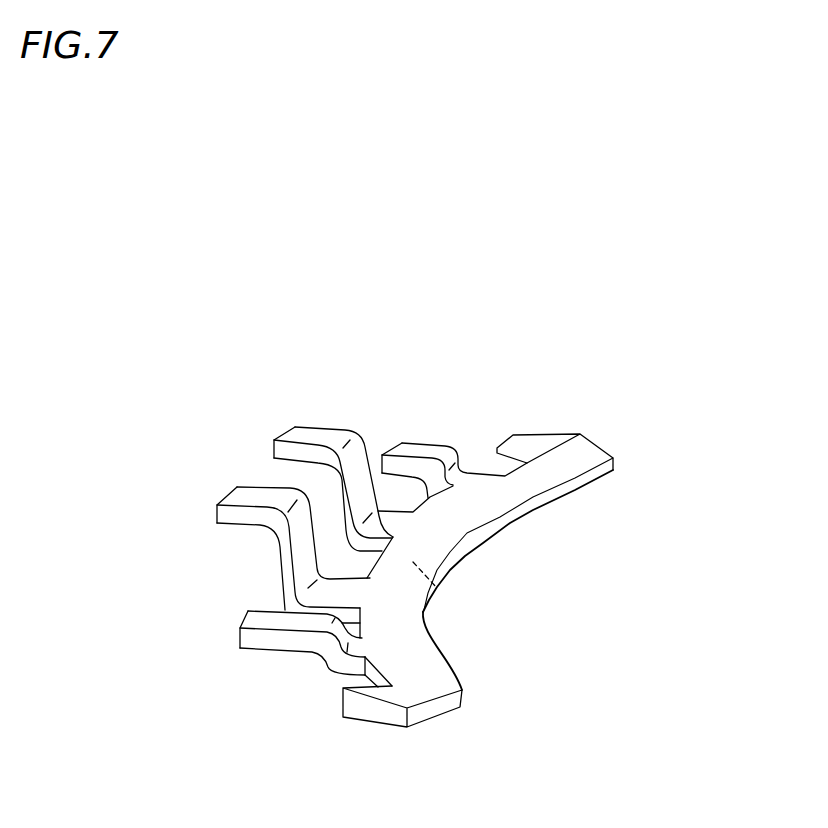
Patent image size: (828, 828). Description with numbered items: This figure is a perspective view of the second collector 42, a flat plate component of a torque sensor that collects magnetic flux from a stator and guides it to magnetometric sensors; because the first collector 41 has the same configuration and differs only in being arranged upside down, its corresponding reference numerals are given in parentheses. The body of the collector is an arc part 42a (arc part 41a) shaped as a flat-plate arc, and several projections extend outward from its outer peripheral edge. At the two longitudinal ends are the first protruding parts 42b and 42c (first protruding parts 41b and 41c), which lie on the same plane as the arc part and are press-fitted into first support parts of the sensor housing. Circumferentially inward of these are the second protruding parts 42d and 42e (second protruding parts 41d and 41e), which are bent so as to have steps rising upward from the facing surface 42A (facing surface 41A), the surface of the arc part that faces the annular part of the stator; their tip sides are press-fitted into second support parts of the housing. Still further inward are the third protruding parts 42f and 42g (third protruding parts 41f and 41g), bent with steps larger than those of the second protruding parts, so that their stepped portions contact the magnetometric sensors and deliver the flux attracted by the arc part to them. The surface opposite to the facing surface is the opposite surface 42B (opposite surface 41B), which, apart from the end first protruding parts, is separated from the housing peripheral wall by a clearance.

The second collector 42 is at (416, 491).
The first collector 41 is at (535, 355).
The facing surface 42A is at (563, 534).
The facing surface 41A is at (487, 495).
The arc part 42a is at (543, 554).
The arc part 41a is at (483, 528).
The opposite surface 42B is at (475, 625).
The opposite surface 41B is at (433, 590).
The first protruding part 42b is at (330, 700).
The first protruding part 41b is at (367, 695).
The first protruding part 42c is at (584, 399).
The first protruding part 41c is at (550, 443).
The second protruding part 42d is at (248, 591).
The second protruding part 41d is at (263, 613).
The second protruding part 42e is at (452, 397).
The second protruding part 41e is at (422, 447).
The third protruding part 42f is at (254, 495).
The third protruding part 41f is at (247, 497).
The third protruding part 42g is at (333, 422).
The third protruding part 41g is at (315, 435).